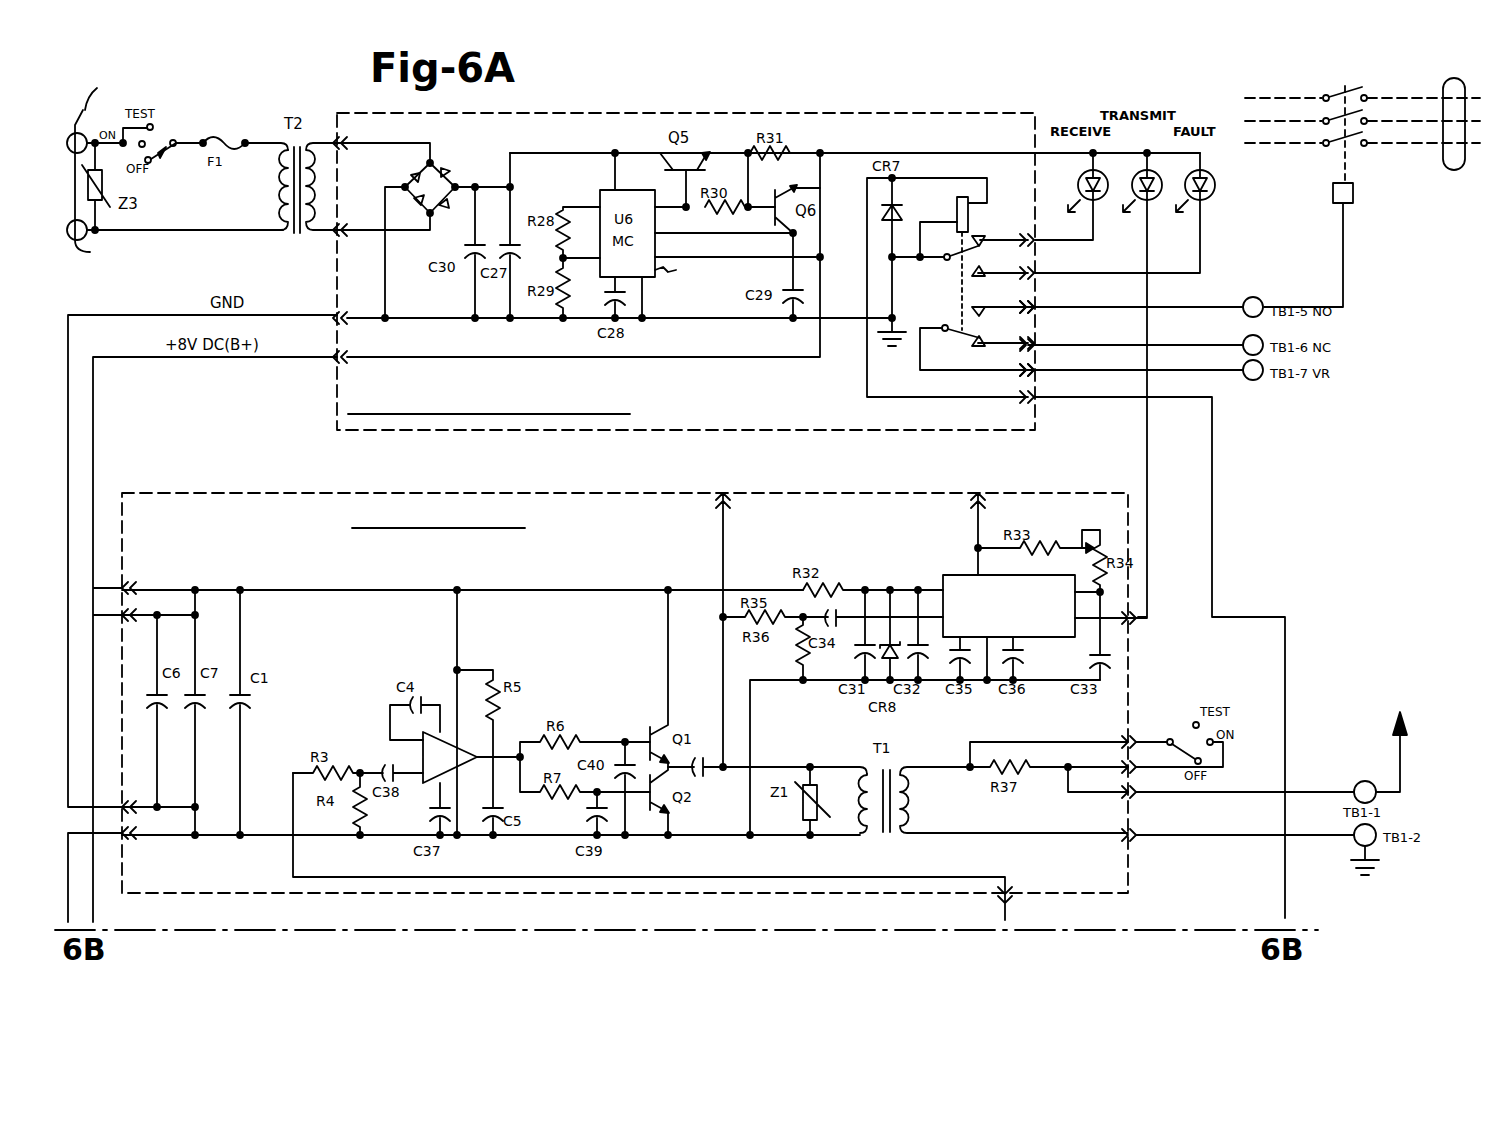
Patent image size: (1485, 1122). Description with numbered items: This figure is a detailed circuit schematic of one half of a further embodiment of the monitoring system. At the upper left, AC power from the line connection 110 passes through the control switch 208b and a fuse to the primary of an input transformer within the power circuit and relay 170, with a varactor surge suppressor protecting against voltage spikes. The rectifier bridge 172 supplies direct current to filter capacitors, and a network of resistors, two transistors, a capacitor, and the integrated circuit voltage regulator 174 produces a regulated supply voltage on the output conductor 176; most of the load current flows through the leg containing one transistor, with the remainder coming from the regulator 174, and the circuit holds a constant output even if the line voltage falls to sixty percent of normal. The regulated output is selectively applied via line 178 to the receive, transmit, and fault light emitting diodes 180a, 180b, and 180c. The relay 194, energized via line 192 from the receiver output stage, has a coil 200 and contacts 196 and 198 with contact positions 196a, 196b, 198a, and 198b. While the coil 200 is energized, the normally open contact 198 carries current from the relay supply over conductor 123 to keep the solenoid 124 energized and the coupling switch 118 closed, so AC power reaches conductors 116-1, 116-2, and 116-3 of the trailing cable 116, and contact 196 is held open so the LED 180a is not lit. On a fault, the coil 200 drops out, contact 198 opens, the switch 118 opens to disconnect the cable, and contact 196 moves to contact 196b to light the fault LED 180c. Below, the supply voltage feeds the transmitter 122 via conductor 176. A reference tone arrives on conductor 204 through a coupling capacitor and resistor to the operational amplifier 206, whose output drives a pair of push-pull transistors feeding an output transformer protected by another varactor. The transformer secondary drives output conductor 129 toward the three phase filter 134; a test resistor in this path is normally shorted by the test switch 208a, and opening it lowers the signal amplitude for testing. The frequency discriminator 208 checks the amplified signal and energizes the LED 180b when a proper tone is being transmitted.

The AC power source connection 110 is at (95, 161).
The control switch 208b is at (160, 128).
The power circuit and relay 170 is at (684, 422).
The rectifier bridge 172 is at (443, 167).
The integrated circuit voltage regulator 174 is at (682, 273).
The output conductor 176 is at (830, 339).
The line 178 is at (898, 158).
The relay 194 is at (962, 202).
The coil 200 is at (955, 214).
The contact 196 is at (966, 263).
The contact position 196a is at (968, 222).
The contact 196b is at (969, 292).
The normally open contact 198 is at (945, 322).
The contact position 198a is at (1003, 333).
The contact position 198b is at (972, 347).
The receive light emitting diode 180a is at (1102, 198).
The transmit light emitting diode 180b is at (1156, 198).
The fault light emitting diode 180c is at (1214, 178).
The coupling switch 118 is at (1340, 88).
The trailing cable 116 is at (1453, 76).
The conductor 116-1 is at (1376, 96).
The conductor 116-2 is at (1378, 114).
The conductor 116-3 is at (1380, 148).
The solenoid 124 is at (1356, 194).
The conductor 123 is at (1343, 258).
The line 192 is at (1212, 562).
The transmitter 122 is at (552, 493).
The conductor 204 is at (978, 877).
The operational amplifier 206 is at (422, 754).
The frequency discriminator 208 is at (957, 573).
The test switch 208a is at (1183, 748).
The output conductor 129 is at (1320, 786).
The three phase filter 134 is at (1382, 743).